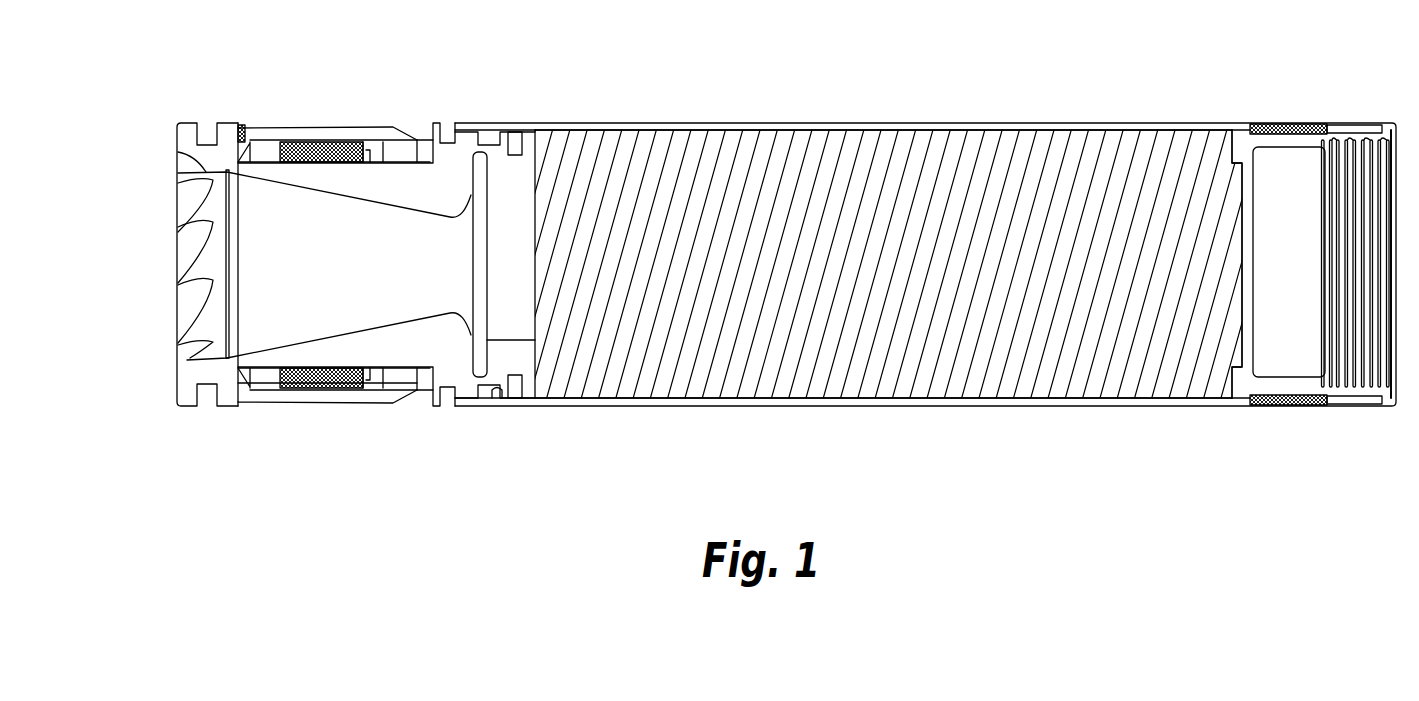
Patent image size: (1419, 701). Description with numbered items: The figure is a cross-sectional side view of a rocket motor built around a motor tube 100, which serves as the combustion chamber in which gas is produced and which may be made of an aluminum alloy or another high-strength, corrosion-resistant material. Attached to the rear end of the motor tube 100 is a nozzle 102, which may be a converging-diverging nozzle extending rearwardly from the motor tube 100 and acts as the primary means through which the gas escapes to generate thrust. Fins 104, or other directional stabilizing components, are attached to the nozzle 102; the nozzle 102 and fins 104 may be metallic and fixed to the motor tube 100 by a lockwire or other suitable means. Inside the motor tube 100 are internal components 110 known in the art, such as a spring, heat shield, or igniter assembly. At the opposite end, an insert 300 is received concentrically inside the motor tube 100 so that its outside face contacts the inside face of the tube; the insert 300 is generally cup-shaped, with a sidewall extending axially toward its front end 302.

The motor tube 100 is at (678, 152).
The nozzle 102 is at (243, 126).
The fins 104 is at (336, 127).
The internal components 110 is at (988, 372).
The insert 300 is at (1372, 187).
The front end 302 is at (1392, 123).